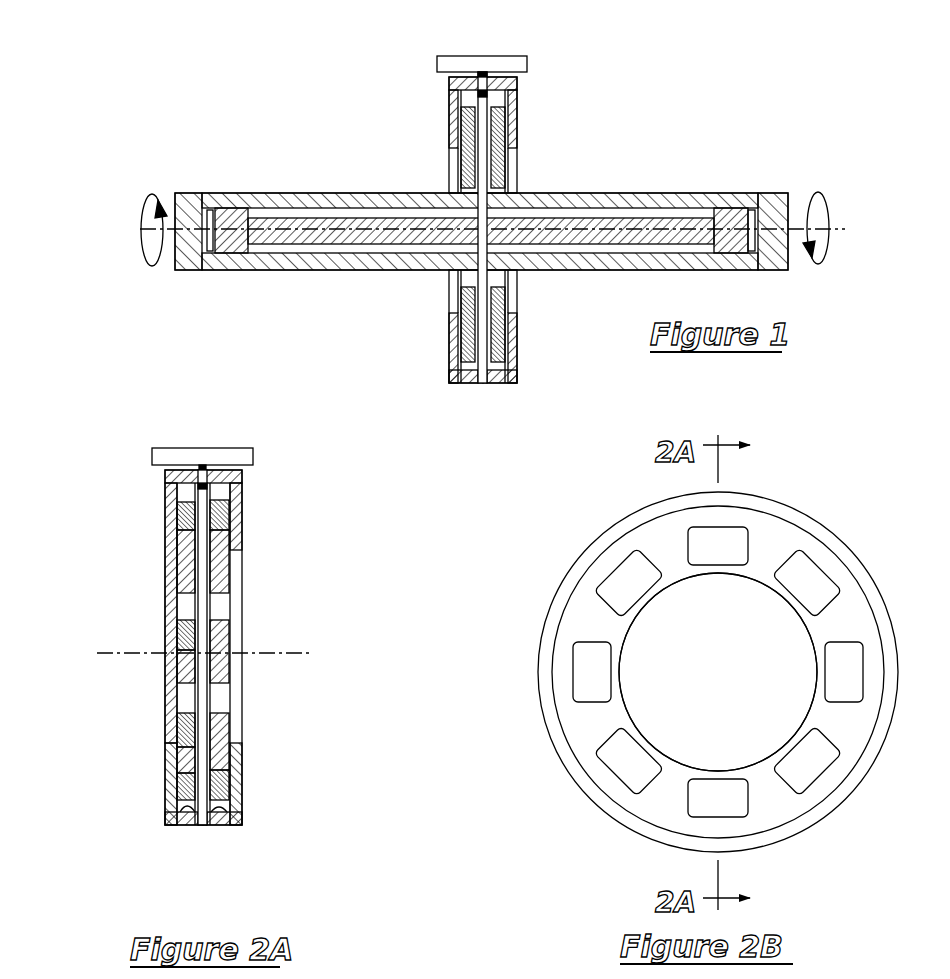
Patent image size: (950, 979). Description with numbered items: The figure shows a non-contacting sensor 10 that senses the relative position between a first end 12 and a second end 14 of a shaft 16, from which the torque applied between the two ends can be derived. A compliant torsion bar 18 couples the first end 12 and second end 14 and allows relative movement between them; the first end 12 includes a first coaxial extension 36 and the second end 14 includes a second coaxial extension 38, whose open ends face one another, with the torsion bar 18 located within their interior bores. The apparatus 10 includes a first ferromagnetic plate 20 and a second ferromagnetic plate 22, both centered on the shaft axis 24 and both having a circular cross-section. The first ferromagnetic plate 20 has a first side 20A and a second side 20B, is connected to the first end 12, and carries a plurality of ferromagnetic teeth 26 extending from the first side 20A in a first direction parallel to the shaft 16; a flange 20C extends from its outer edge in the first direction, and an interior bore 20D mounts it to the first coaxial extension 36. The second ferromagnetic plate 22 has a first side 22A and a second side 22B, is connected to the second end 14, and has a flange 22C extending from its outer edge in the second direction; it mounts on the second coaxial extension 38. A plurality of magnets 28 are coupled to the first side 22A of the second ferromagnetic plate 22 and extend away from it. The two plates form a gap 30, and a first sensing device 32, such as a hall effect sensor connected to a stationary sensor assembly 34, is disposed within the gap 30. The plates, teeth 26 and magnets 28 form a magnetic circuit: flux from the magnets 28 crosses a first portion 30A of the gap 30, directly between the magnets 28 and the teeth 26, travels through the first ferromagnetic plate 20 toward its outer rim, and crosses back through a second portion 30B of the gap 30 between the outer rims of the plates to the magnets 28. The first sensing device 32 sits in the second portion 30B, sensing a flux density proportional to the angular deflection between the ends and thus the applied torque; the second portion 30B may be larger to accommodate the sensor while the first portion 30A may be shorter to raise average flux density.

In FIG. 1, the non-contacting sensor 10 is at (300, 140).
In FIG. 1, the first end 12 is at (235, 178).
In FIG. 1, the second end 14 is at (692, 178).
In FIG. 1, the shaft 16 is at (145, 192).
In FIG. 1, the torsion bar 18 is at (290, 247).
In FIG. 1, the first ferromagnetic plate 20 is at (438, 158).
In FIG. 2A, the first ferromagnetic plate 20 is at (133, 567).
In FIG. 2B, the first ferromagnetic plate 20 is at (785, 848).
In FIG. 1, the first side 20A is at (470, 385).
In FIG. 2A, the first side 20A is at (192, 826).
In FIG. 2B, the first side 20A is at (595, 722).
In FIG. 1, the second side 20B is at (452, 340).
In FIG. 2A, the second side 20B is at (165, 773).
In FIG. 2A, the flange 20C is at (175, 826).
In FIG. 2B, the flange 20C is at (600, 800).
In FIG. 2B, the interior bore 20D is at (665, 740).
In FIG. 1, the second ferromagnetic plate 22 is at (530, 148).
In FIG. 2A, the second ferromagnetic plate 22 is at (268, 552).
In FIG. 1, the first side 22A is at (494, 385).
In FIG. 2A, the first side 22A is at (215, 826).
In FIG. 1, the second side 22B is at (515, 350).
In FIG. 2A, the second side 22B is at (243, 735).
In FIG. 2A, the flange 22C is at (232, 826).
In FIG. 1, the shaft axis 24 is at (835, 218).
In FIG. 2A, the shaft axis 24 is at (278, 653).
In FIG. 2A, the ferromagnetic teeth 26 is at (178, 510).
In FIG. 2B, the ferromagnetic teeth 26 is at (655, 555).
In FIG. 2A, the magnets 28 is at (238, 510).
In FIG. 1, the gap 30 is at (468, 100).
In FIG. 2A, the gap 30 is at (212, 492).
In FIG. 2A, the first portion of gap 30A is at (190, 745).
In FIG. 2A, the second portion of gap 30B is at (203, 835).
In FIG. 1, the first sensing device 32 is at (483, 77).
In FIG. 2A, the first sensing device 32 is at (195, 468).
In FIG. 1, the stationary sensor assembly 34 is at (513, 56).
In FIG. 2A, the stationary sensor assembly 34 is at (240, 448).
In FIG. 1, the first coaxial extension 36 is at (205, 193).
In FIG. 1, the second coaxial extension 38 is at (745, 193).